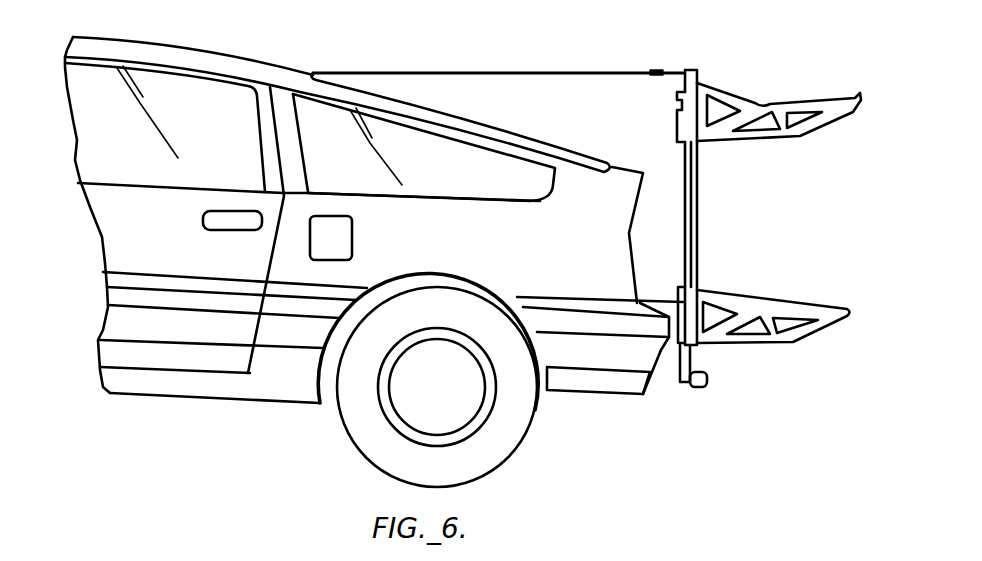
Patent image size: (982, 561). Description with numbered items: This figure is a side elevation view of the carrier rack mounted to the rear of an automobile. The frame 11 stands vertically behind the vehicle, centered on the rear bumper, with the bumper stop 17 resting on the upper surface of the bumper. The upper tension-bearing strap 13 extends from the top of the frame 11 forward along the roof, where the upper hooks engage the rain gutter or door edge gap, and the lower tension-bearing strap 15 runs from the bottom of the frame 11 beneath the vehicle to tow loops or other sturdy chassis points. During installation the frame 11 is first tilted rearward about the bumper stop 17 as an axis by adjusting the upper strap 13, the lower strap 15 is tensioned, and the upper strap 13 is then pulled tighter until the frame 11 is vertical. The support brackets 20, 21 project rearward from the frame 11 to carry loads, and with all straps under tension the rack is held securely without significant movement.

The frame 11 is at (711, 207).
The upper tension-bearing strap 13 is at (567, 53).
The lower tension-bearing strap 15 is at (667, 395).
The bumper stop 17 is at (663, 287).
The support bracket 20 is at (793, 97).
The support bracket 21 is at (757, 303).